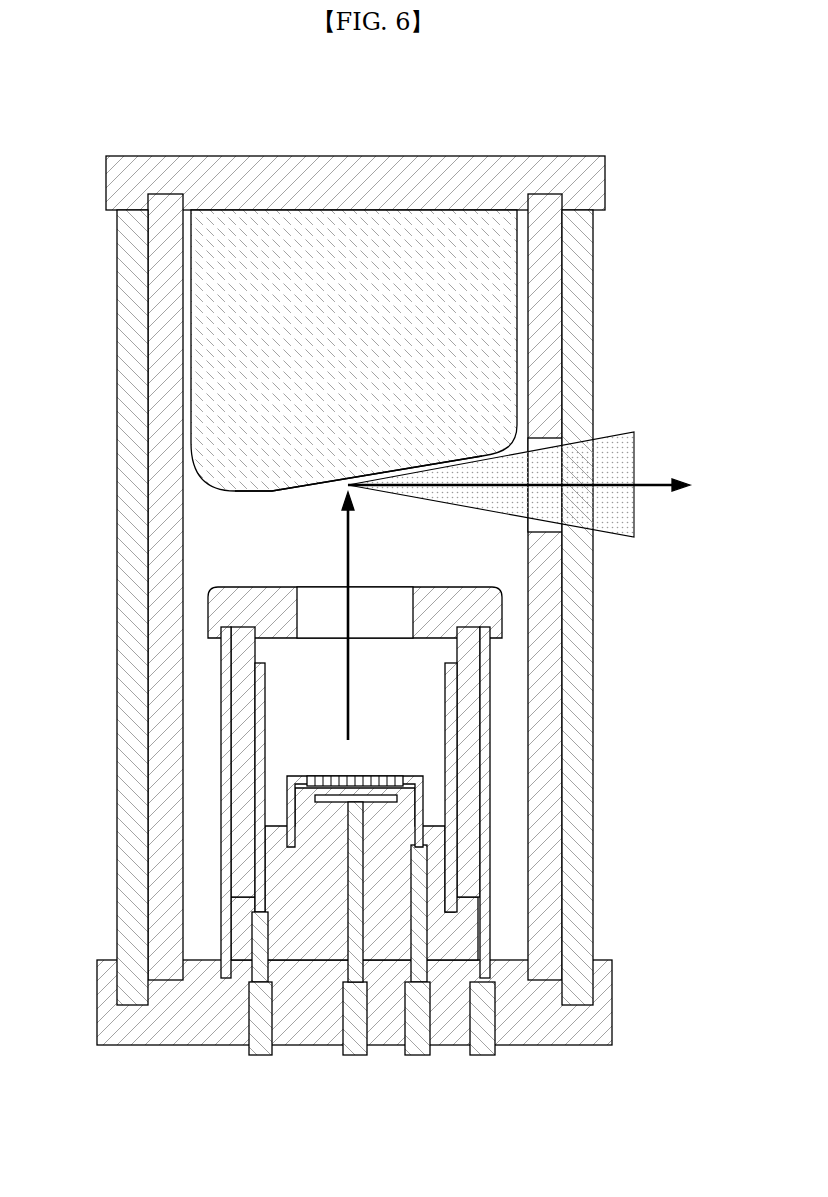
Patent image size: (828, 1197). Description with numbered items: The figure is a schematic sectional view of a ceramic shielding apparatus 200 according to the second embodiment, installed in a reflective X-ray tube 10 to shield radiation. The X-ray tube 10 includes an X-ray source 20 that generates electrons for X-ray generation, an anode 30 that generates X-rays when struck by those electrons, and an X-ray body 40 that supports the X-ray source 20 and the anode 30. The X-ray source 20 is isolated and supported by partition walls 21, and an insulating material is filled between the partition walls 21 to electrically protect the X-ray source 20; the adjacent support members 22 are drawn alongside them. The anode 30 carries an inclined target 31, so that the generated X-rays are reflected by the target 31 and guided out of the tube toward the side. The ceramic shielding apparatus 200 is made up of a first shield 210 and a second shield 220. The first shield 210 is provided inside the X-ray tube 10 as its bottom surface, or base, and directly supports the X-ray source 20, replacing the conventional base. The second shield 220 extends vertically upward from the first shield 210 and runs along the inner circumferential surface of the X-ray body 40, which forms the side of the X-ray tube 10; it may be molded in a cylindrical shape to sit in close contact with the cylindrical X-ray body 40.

The X-ray tube 10 is at (341, 112).
The X-ray source 20 is at (415, 755).
The partition walls 21 is at (485, 848).
The thick support pillar 22 is at (466, 803).
The anode 30 is at (351, 362).
The target 31 is at (272, 491).
The X-ray body 40 is at (584, 922).
The ceramic shielding apparatus 200 is at (351, 655).
The first shield 210 is at (218, 1027).
The second shield 220 is at (155, 925).